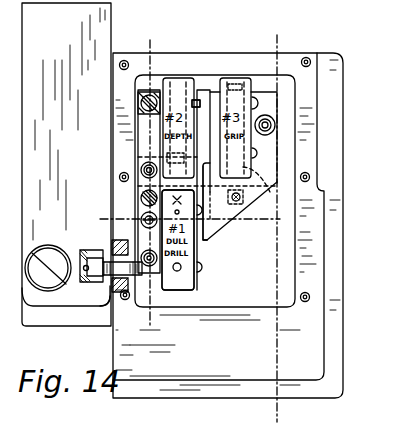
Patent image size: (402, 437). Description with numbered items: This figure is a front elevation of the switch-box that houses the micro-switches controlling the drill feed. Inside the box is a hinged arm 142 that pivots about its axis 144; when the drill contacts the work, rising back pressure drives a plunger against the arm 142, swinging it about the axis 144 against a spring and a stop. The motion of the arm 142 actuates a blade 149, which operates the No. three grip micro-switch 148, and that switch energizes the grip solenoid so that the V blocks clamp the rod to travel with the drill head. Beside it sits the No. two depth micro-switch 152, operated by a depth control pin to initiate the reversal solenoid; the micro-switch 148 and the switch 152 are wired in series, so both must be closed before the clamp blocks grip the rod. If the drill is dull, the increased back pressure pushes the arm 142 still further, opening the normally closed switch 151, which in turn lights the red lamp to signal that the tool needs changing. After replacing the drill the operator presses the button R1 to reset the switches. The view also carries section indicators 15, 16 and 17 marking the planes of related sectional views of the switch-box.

The micro-switch No. 2 152 is at (196, 76).
The micro-switch No. 3 148 is at (247, 115).
The blade 149 is at (271, 189).
The hinged arm 142 is at (220, 218).
The axis 144 is at (210, 242).
The normally closed switch 151 is at (194, 287).
The button R1 is at (97, 287).
The section line 15 is at (277, 37).
The section line 16 is at (98, 227).
The section line 17 is at (172, 39).